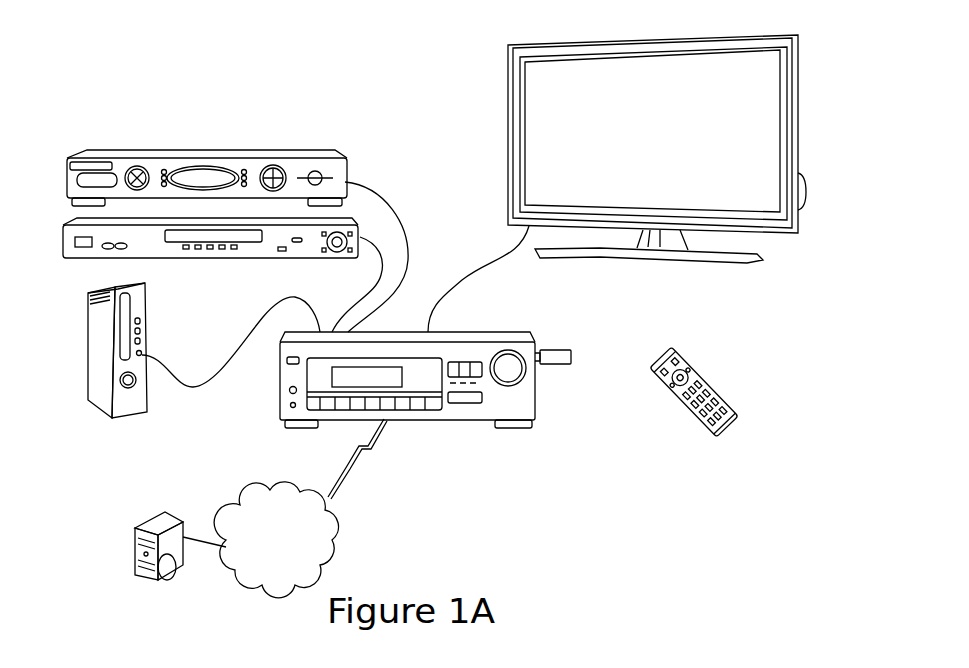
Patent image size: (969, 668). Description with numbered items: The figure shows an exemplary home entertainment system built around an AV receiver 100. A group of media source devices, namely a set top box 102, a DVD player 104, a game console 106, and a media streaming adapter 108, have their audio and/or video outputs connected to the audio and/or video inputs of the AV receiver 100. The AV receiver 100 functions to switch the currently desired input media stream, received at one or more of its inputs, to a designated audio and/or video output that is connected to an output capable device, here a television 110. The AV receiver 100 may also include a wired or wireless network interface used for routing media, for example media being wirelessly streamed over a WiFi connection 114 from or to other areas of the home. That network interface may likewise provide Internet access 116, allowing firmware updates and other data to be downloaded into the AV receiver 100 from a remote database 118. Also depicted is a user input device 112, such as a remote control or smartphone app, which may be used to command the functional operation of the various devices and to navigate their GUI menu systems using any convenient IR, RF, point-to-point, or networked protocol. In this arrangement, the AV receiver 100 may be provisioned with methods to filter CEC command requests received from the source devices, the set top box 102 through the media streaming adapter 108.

The AV receiver 100 is at (483, 330).
The set top box 102 is at (295, 146).
The DVD player 104 is at (98, 262).
The game console 106 is at (128, 422).
The media streaming adapter 108 is at (553, 365).
The television 110 is at (507, 173).
The user input device 112 is at (687, 355).
The WiFi connection 114 is at (367, 463).
The Internet access 116 is at (297, 482).
The remote database 118 is at (143, 520).